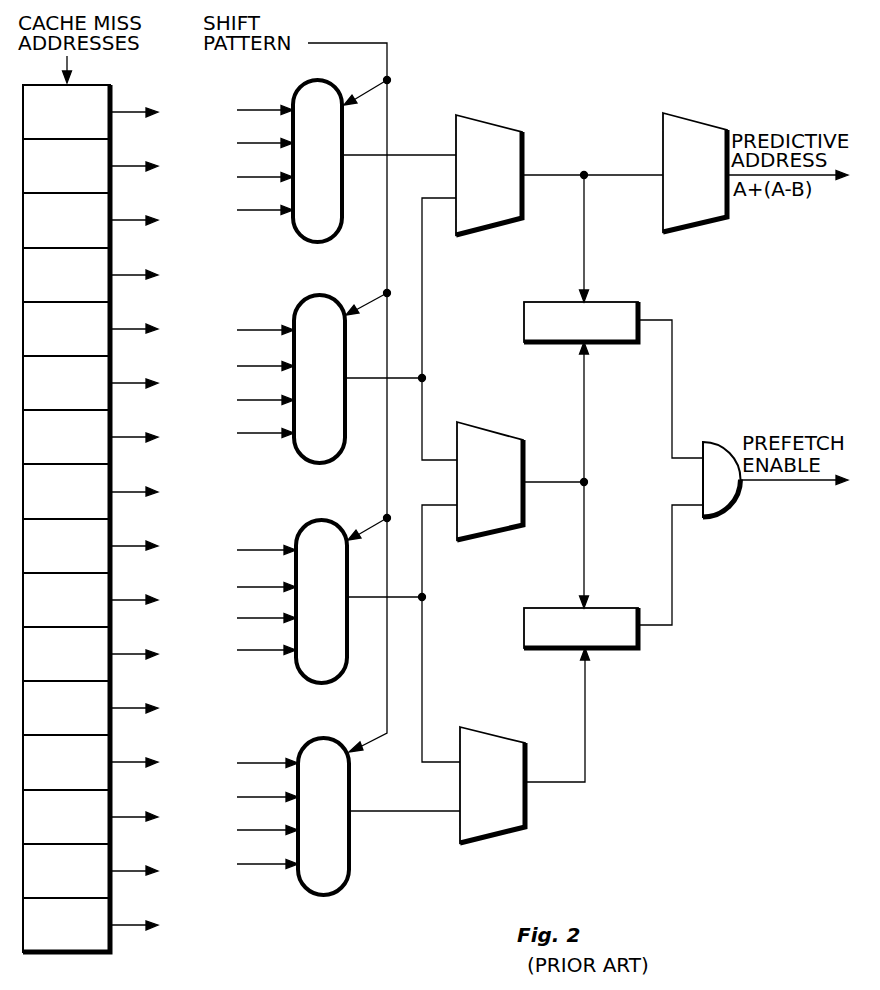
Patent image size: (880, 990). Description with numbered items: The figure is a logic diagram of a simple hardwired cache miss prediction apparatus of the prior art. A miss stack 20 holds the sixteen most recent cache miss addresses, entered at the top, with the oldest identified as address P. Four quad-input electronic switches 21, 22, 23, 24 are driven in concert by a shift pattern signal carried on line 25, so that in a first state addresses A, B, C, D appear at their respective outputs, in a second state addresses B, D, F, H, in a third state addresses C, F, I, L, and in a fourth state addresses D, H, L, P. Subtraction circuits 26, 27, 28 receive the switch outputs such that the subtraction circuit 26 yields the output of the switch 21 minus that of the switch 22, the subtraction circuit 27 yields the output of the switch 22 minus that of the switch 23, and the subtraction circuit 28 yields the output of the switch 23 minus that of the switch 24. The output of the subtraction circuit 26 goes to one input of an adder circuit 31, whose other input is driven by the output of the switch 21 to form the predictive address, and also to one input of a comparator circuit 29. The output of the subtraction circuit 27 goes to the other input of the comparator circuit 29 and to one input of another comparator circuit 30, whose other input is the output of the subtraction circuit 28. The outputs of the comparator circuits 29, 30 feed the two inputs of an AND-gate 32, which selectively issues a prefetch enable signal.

The miss stack 20 is at (90, 507).
The quad-input electronic switch 21 is at (288, 149).
The quad-input electronic switch 22 is at (285, 362).
The quad-input electronic switch 23 is at (288, 584).
The quad-input electronic switch 24 is at (287, 800).
The line 25 is at (370, 393).
The subtraction circuit 26 is at (489, 159).
The subtraction circuit 27 is at (492, 469).
The subtraction circuit 28 is at (492, 770).
The comparator circuit 29 is at (581, 305).
The comparator circuit 30 is at (581, 612).
The adder circuit 31 is at (698, 158).
The AND-gate 32 is at (727, 457).